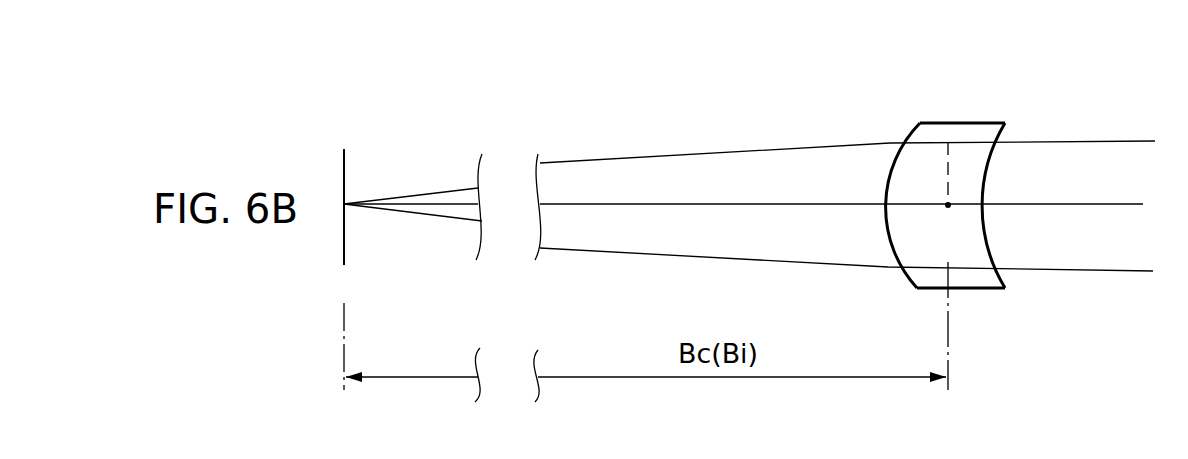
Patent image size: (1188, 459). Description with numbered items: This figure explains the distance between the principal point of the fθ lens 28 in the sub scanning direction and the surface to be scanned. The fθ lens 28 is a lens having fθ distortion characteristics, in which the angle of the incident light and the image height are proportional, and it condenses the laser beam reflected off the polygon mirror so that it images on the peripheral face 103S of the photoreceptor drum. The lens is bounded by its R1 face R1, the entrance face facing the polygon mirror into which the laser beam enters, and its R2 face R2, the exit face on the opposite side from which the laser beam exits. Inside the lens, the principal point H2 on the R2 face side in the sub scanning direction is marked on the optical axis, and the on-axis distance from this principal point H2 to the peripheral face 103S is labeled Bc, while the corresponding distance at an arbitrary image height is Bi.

The fθ lens 28 is at (947, 148).
The peripheral face of the photoreceptor drum 103S is at (346, 161).
The R1 face R1 is at (990, 152).
The R2 face R2 is at (890, 165).
The principal point on the R2 face side H2 is at (948, 197).